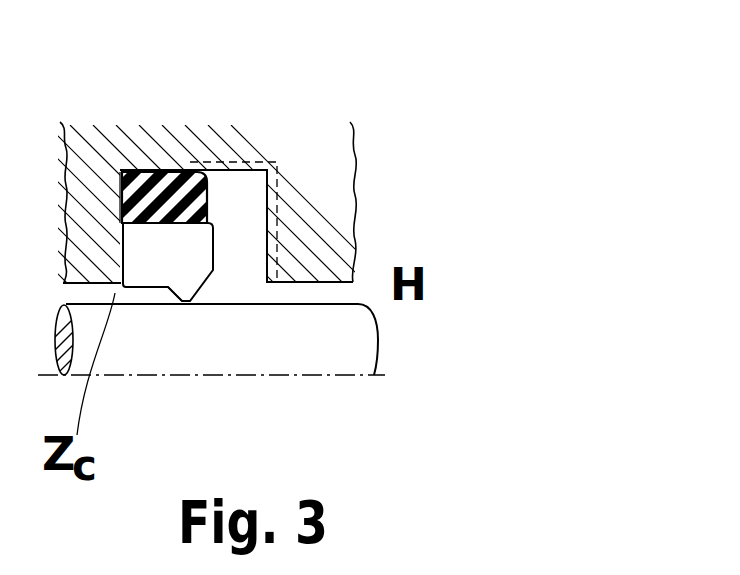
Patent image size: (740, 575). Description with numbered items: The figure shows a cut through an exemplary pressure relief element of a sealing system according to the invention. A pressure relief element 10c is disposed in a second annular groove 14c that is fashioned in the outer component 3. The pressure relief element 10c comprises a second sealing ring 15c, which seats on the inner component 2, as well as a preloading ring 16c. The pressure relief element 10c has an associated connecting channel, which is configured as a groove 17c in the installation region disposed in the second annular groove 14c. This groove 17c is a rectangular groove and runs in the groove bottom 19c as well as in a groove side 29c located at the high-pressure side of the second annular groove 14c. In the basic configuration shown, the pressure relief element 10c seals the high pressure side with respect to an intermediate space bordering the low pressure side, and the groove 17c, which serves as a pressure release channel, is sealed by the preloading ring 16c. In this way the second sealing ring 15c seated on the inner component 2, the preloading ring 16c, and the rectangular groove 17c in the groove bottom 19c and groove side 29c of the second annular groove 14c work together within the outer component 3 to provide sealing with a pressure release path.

The outer component 3 is at (340, 135).
The pressure relief element 10c is at (166, 155).
The preloading ring 16c is at (120, 170).
The groove 17c is at (213, 162).
The groove bottom 19c is at (228, 170).
The second annular groove 14c is at (249, 198).
The second sealing ring 15c is at (193, 263).
The groove side 29c is at (253, 227).
The inner component 2 is at (355, 358).